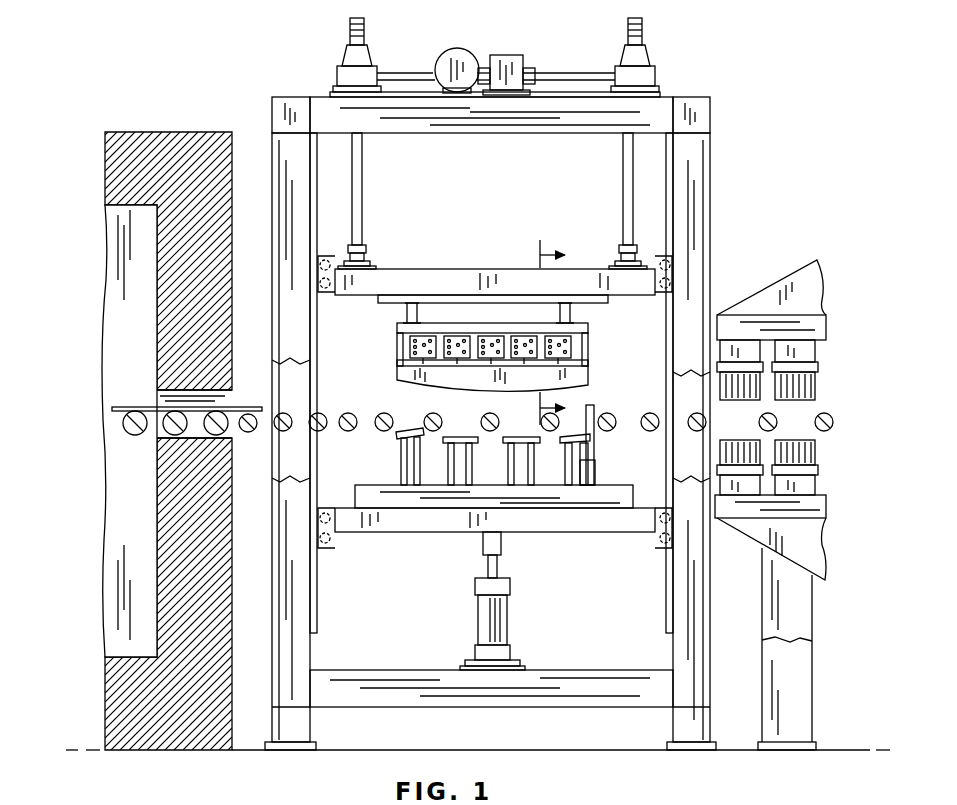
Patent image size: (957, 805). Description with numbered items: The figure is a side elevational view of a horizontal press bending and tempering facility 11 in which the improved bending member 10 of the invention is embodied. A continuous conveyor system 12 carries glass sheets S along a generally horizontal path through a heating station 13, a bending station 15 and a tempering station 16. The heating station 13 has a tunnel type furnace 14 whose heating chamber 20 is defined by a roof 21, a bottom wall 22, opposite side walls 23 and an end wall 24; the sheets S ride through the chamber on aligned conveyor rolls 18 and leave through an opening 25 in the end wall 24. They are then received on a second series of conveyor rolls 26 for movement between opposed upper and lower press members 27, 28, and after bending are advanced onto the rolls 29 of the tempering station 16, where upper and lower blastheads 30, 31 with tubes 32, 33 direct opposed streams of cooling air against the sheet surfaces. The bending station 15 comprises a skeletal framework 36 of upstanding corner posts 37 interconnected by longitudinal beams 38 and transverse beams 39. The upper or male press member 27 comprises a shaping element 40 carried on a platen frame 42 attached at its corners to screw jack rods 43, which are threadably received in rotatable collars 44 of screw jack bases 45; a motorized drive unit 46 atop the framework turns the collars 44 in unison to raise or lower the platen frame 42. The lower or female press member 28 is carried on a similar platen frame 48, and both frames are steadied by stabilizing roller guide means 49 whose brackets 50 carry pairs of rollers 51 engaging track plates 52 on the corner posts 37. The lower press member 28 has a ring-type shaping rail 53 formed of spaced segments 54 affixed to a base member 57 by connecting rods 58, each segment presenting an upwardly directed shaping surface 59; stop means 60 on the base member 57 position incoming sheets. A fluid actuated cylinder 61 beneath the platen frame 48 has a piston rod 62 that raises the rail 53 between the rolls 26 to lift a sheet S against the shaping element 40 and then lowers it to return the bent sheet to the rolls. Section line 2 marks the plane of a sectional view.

The bending member 10 is at (650, 358).
The horizontal press bending and tempering facility 11 is at (774, 56).
The conveyor system 12 is at (272, 460).
The heating station 13 is at (526, 379).
The furnace 14 is at (149, 396).
The bending station 15 is at (680, 74).
The tempering station 16 is at (797, 460).
The conveyor rolls 18 is at (168, 432).
The heating chamber 20 is at (120, 240).
The roof 21 is at (120, 175).
The bottom wall 22 is at (120, 692).
The side walls 23 is at (146, 531).
The end wall 24 is at (218, 270).
The opening 25 is at (160, 405).
The conveyor rolls 26 is at (288, 414).
The upper press member 27 is at (463, 367).
The lower press member 28 is at (495, 467).
The rolls 29 is at (776, 420).
The upper blasthead 30 is at (812, 290).
The lower blasthead 31 is at (820, 546).
The tubes 32 is at (798, 393).
The tubes 33 is at (806, 450).
The skeletal framework 36 is at (714, 176).
The corner posts 37 is at (273, 163).
The longitudinal beams 38 is at (494, 135).
The transverse beams 39 is at (272, 118).
The shaping element 40 is at (582, 379).
The platen frame 42 is at (450, 276).
The screw jack rods 43 is at (362, 184).
The rotatable collars 44 is at (344, 62).
The screw jack bases 45 is at (338, 80).
The motorized drive unit 46 is at (512, 54).
The platen frame 48 is at (444, 534).
The stabilizing roller guide means 49 is at (338, 254).
The brackets 50 is at (336, 296).
The rollers 51 is at (672, 288).
The track plates 52 is at (318, 200).
The shaping rail 53 is at (398, 438).
The segments 54 is at (505, 440).
The base member 57 is at (592, 483).
The connecting rods 58 is at (560, 465).
The shaping surface 59 is at (404, 430).
The stop means 60 is at (596, 420).
The fluid actuated cylinder 61 is at (478, 622).
The piston rod 62 is at (500, 565).
The section line 2 is at (542, 327).
The sheets S is at (115, 409).